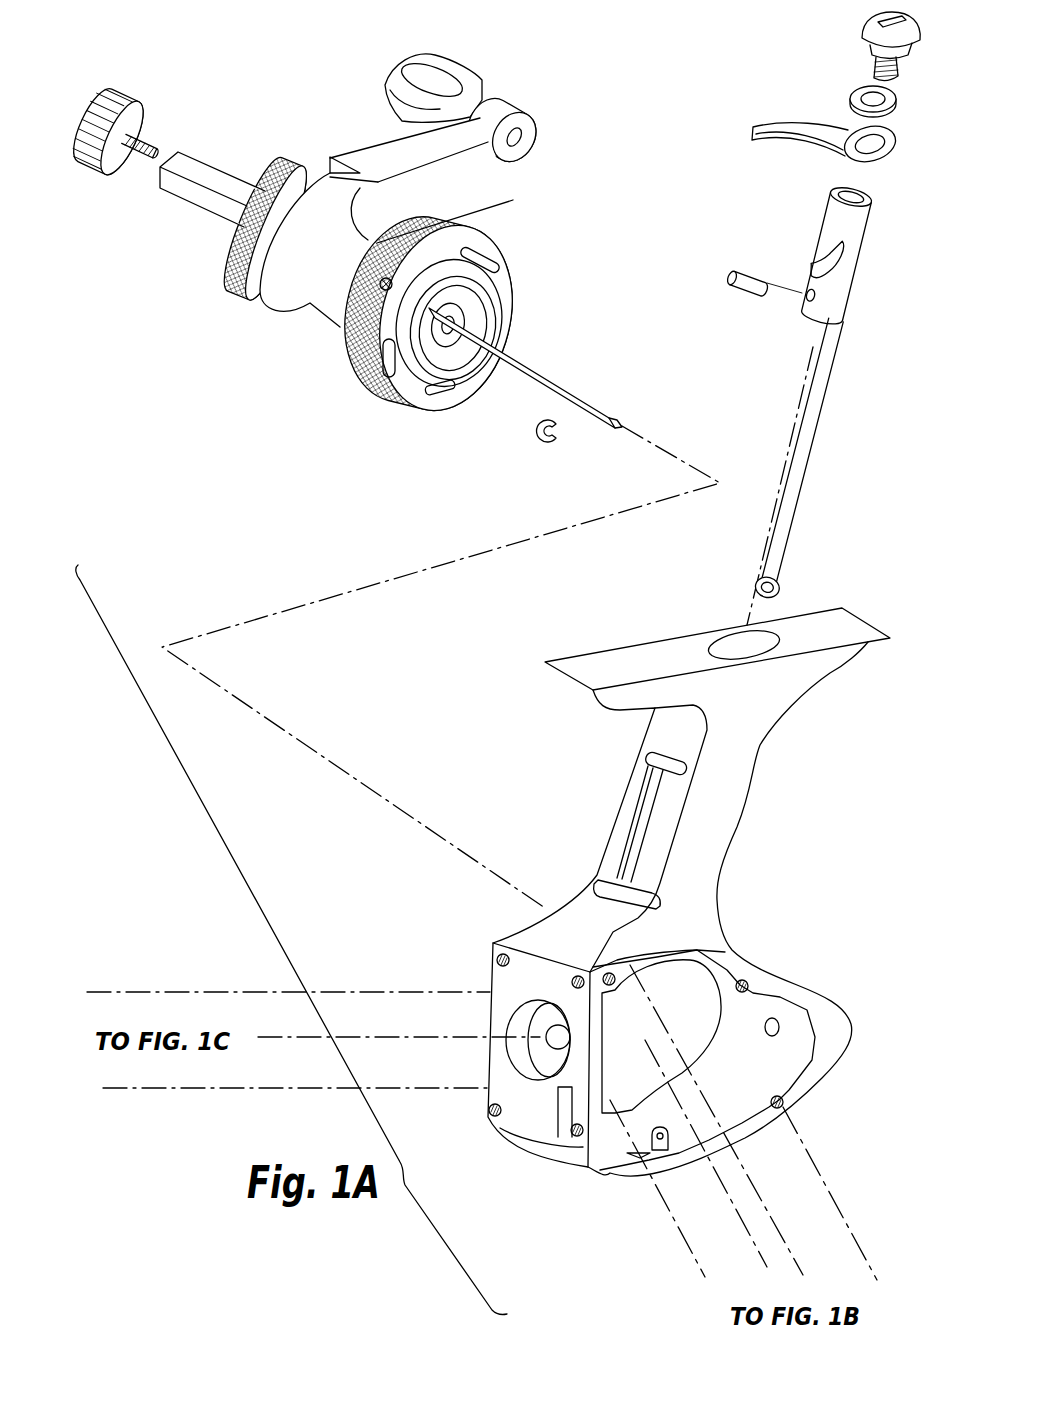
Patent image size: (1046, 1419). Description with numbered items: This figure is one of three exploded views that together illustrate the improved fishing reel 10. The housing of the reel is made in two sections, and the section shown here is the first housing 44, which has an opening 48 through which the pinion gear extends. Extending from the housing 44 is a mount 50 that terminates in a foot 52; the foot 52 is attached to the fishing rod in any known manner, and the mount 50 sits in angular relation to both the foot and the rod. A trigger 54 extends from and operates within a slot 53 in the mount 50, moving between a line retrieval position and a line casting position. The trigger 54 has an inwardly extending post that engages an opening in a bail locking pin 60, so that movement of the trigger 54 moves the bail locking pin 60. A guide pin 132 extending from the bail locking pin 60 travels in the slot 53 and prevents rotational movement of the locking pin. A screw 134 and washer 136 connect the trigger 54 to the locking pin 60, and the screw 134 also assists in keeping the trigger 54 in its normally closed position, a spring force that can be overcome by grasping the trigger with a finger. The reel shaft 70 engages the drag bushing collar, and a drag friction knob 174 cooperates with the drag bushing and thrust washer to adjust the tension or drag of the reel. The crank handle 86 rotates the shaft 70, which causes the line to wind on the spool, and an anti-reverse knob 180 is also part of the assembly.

The reel 10 is at (433, 719).
The first housing 44 is at (642, 1168).
The opening 48 is at (545, 1052).
The mount 50 is at (720, 822).
The foot 52 is at (825, 683).
The slot 53 is at (630, 840).
The trigger 54 is at (790, 128).
The bail locking pin 60 is at (853, 225).
The reel shaft 70 is at (542, 365).
The crank handle 86 is at (307, 287).
The guide pin 132 is at (745, 270).
The screw 134 is at (862, 25).
The washer 136 is at (857, 90).
The drag friction knob 174 is at (295, 163).
The anti-reverse knob 180 is at (460, 218).